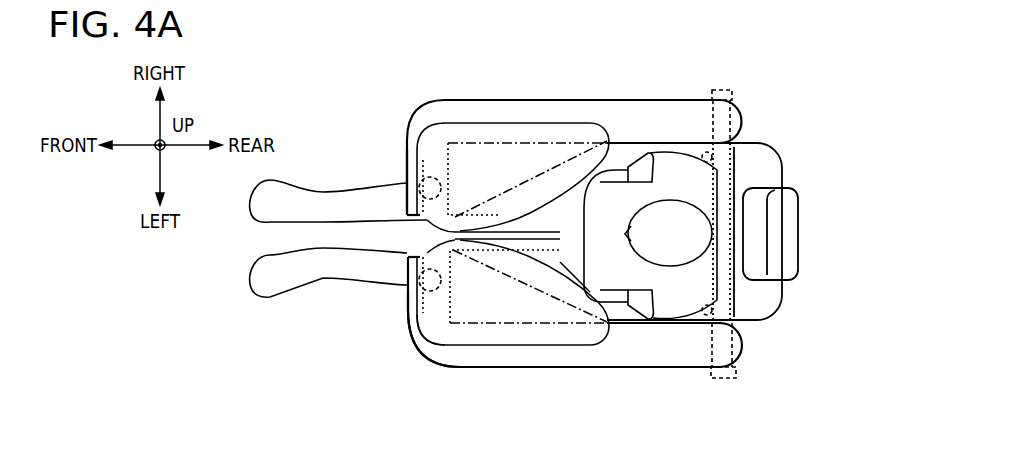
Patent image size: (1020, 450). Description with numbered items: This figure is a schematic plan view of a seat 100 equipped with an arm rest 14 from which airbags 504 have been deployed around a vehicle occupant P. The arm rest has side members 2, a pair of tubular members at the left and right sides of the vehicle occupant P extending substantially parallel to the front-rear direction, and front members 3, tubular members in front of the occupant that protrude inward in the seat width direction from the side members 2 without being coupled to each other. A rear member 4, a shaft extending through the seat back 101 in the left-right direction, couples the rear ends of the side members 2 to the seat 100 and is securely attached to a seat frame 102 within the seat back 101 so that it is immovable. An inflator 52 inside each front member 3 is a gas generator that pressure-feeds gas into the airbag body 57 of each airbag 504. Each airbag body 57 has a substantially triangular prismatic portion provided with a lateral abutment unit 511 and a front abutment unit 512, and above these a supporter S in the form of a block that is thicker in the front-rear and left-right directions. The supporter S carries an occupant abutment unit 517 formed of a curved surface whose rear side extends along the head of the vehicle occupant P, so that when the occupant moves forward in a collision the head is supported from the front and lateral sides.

The side member 2 is at (685, 100).
The front member 3 is at (407, 321).
The rear member 4 is at (745, 108).
The arm rest 14 is at (398, 160).
The inflator 52 is at (420, 127).
The airbag body 57 is at (456, 140).
The seat 100 is at (812, 235).
The seat back 101 is at (766, 169).
The seat frame 102 is at (707, 303).
The airbag 504 is at (463, 37).
The lateral abutment unit 511 is at (538, 153).
The front abutment unit 512 is at (493, 143).
The occupant abutment unit 517 is at (576, 275).
The vehicle occupant P is at (642, 167).
The supporter S is at (462, 350).